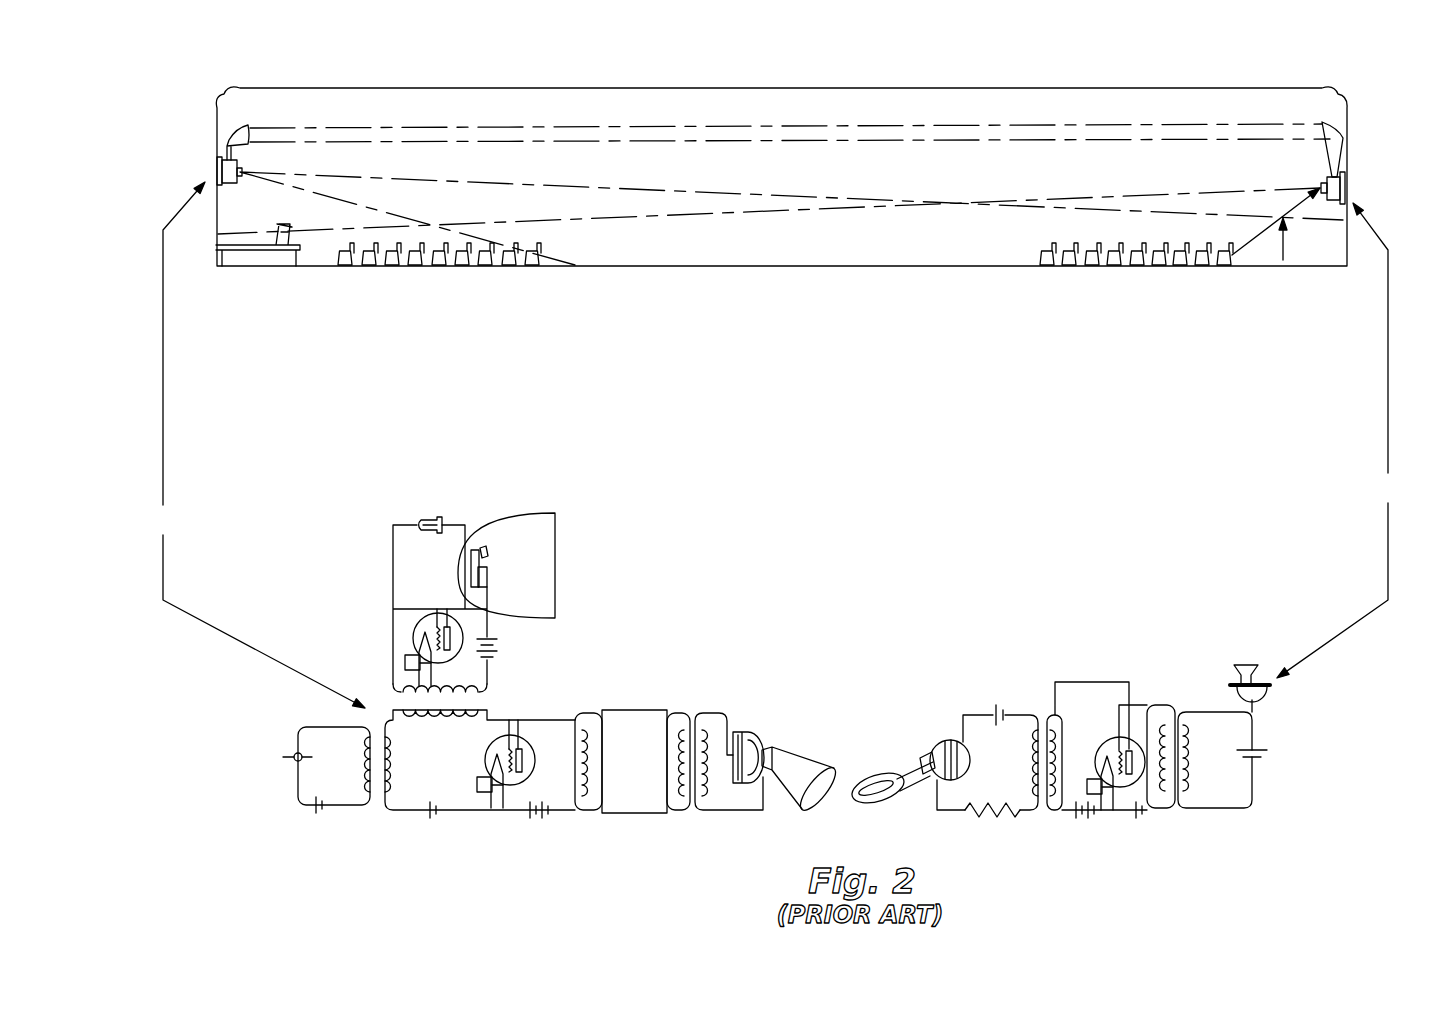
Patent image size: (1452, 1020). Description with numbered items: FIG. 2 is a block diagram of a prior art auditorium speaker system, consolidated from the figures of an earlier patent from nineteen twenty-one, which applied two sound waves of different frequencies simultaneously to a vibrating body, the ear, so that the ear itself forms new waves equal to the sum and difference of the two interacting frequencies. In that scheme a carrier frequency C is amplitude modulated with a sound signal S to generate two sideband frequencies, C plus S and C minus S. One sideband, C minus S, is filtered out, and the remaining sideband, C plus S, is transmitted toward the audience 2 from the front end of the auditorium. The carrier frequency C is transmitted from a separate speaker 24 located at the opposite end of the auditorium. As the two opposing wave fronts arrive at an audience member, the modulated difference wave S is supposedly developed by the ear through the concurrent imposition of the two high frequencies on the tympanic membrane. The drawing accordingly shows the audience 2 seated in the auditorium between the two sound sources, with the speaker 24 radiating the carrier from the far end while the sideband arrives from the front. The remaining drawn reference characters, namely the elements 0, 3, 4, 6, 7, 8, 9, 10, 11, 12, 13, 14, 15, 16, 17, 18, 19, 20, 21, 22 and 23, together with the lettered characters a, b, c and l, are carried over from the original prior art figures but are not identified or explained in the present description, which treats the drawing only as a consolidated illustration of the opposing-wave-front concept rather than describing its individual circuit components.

The connection junction 0 is at (430, 608).
The audience 2 is at (368, 245).
The lecture table 3 is at (222, 243).
The loudspeaker and microphone unit 4 is at (219, 165).
The amplifier tube 6 is at (415, 640).
The light source lamp 7 is at (428, 518).
The coupling transformer 8 is at (450, 692).
The photoelectric cell 9 is at (472, 550).
The reflector 10 is at (557, 568).
The receiving horn 11 is at (1325, 122).
The transformer circuit 12 is at (425, 776).
The input circuit 13 is at (320, 776).
The amplifier tube 14 is at (520, 745).
The primary coil 15 is at (585, 745).
The transformer core 16 is at (658, 710).
The secondary coil 17 is at (702, 720).
The microphone 18 is at (746, 735).
The horn 19 is at (805, 770).
The loudspeaker 20 is at (1331, 173).
The battery 21 is at (1000, 705).
The microphone transformer circuit 22 is at (966, 780).
The resistor 23 is at (990, 815).
The speaker 24 is at (910, 760).
The sound path a is at (780, 218).
The light beam b is at (914, 135).
The height c is at (1276, 224).
The length l is at (863, 174).